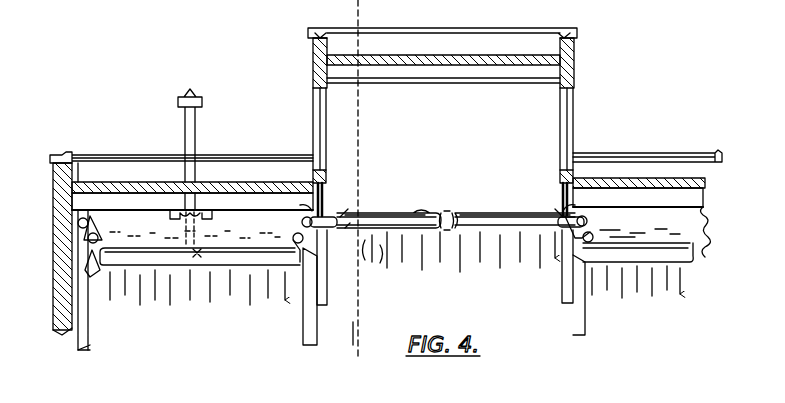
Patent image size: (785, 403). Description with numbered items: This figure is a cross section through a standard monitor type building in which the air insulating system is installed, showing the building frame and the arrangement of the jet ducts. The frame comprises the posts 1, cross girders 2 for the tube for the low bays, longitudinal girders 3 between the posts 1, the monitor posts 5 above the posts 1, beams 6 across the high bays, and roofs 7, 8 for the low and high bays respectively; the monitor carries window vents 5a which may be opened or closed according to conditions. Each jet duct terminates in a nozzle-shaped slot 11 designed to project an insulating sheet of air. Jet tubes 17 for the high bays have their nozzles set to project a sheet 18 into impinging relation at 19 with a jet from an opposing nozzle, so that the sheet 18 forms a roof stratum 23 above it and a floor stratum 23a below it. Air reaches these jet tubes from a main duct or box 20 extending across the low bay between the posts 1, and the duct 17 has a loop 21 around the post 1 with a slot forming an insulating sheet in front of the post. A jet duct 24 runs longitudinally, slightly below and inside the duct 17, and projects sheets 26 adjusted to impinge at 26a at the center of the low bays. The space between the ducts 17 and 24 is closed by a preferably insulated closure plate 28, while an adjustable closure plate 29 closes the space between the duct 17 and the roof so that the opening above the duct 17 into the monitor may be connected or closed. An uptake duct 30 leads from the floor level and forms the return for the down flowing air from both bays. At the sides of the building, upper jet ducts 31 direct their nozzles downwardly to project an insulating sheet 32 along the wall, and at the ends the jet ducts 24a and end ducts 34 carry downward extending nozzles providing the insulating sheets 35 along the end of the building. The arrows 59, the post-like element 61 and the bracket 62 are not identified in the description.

The post 1 is at (328, 292).
The cross girder 2 is at (258, 200).
The longitudinal girder 3 is at (324, 197).
The monitor post 5 is at (326, 125).
The window vent 5a is at (326, 153).
The beam 6 is at (433, 84).
The roof 7 is at (108, 186).
The roof 8 is at (395, 60).
The nozzle-shaped slot 11 is at (103, 217).
The jet tube 17 is at (314, 215).
The sheet 18 is at (388, 217).
The impinging point 19 is at (440, 218).
The main duct or box 20 is at (704, 230).
The loop 21 is at (364, 220).
The roof stratum 23 is at (450, 160).
The floor stratum 23a is at (392, 327).
The jet duct 24 is at (89, 241).
The jet duct 24a is at (396, 260).
The sheet 26 is at (138, 242).
The impinging point 26a is at (198, 246).
The closure plate 28 is at (322, 227).
The adjustable closure plate 29 is at (308, 210).
The uptake duct 30 is at (313, 330).
The upper jet duct 31 is at (79, 223).
The insulating sheet 32 is at (85, 290).
The end duct 34 is at (378, 216).
The insulating sheet 35 is at (398, 280).
The flow arrows 59 is at (395, 276).
The post 61 is at (196, 136).
The clamp 62 is at (175, 217).